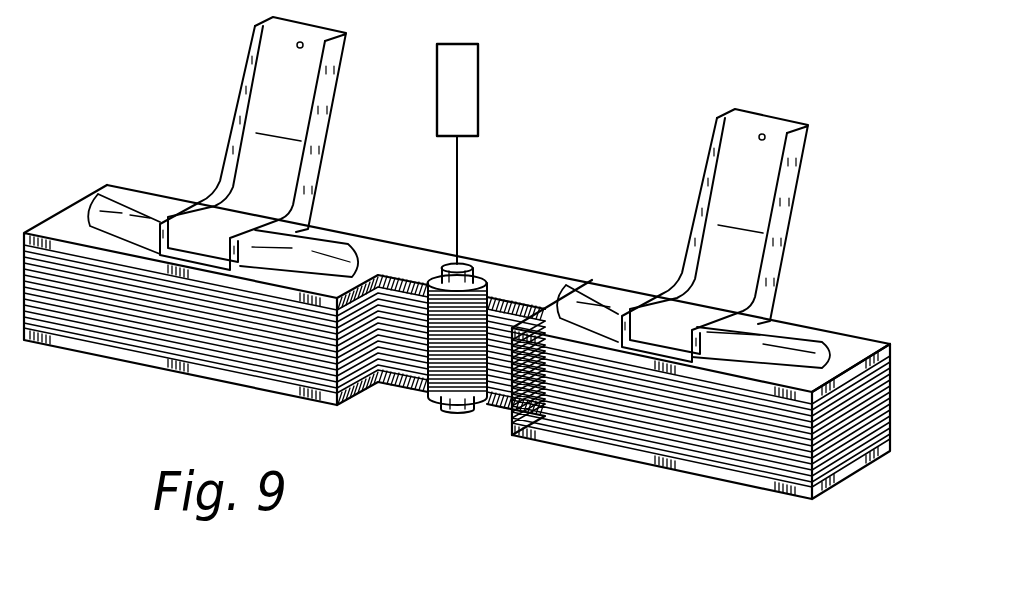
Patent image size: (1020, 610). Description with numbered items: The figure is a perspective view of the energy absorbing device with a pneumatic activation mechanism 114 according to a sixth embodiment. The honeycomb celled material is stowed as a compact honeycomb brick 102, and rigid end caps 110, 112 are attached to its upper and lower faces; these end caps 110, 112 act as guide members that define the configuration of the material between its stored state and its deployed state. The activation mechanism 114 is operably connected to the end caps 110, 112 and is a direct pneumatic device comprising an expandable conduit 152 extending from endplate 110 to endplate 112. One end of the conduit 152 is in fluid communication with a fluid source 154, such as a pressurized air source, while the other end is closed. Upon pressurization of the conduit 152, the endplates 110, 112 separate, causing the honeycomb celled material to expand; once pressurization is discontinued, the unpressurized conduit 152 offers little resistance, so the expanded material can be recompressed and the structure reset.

The honeycomb brick 102 is at (641, 412).
The end cap 110 is at (848, 346).
The end cap 112 is at (172, 365).
The activation mechanism 114 is at (474, 265).
The expandable conduit 152 is at (462, 380).
The fluid source 154 is at (479, 88).